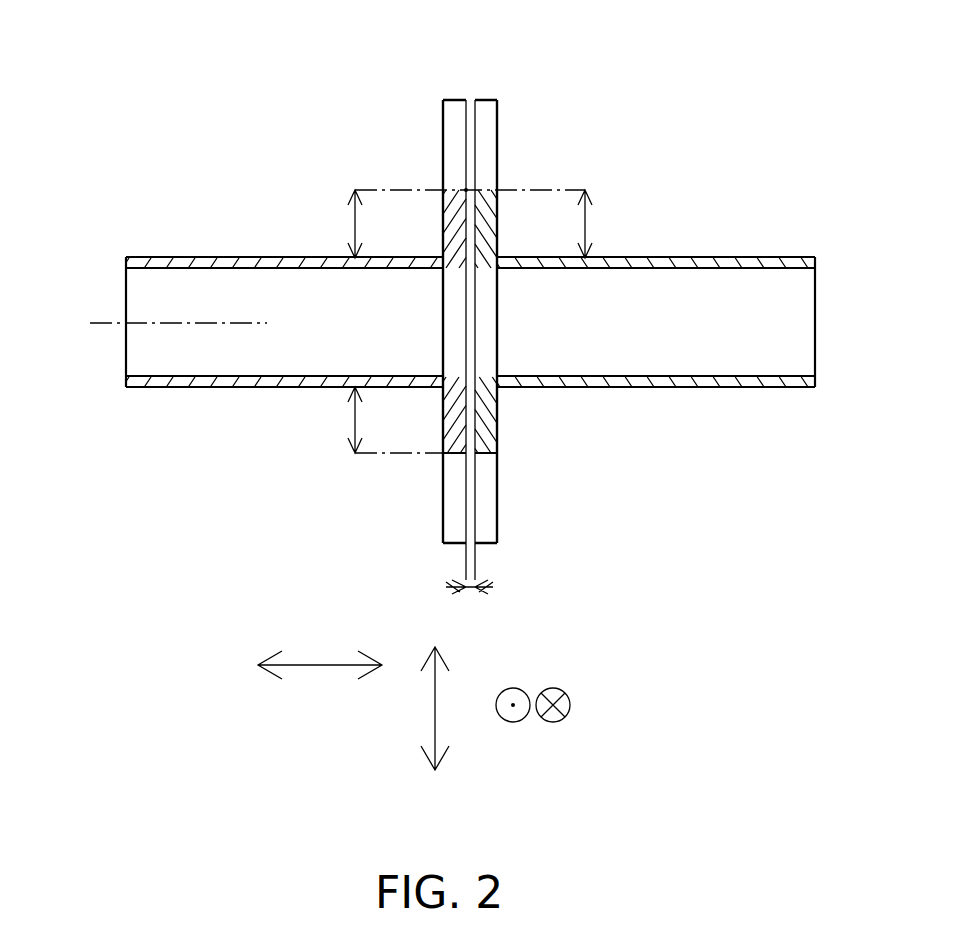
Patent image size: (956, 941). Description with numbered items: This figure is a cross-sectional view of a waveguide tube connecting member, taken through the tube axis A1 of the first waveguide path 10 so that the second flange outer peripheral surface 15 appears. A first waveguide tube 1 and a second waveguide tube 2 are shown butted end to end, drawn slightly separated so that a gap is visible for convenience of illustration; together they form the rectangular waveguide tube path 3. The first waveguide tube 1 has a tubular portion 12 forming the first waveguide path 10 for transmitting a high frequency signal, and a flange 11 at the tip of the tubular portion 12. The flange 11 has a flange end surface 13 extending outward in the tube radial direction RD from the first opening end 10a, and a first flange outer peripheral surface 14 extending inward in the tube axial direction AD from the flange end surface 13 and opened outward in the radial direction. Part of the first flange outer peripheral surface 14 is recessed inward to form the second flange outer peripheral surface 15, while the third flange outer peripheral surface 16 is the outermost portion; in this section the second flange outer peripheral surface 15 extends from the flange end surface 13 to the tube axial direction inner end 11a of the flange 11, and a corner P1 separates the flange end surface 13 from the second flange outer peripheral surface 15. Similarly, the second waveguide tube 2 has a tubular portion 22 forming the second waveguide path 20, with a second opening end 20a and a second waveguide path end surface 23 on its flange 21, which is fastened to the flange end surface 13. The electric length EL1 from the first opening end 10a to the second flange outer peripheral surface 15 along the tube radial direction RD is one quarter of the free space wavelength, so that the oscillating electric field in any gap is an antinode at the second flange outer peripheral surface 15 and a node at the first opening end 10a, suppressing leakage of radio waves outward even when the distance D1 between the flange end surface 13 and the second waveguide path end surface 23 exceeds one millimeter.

The first waveguide tube 1 is at (306, 34).
The second waveguide tube 2 is at (616, 42).
The rectangular waveguide tube path 3 is at (470, 318).
The first waveguide path 10 is at (206, 360).
The first opening end 10a is at (464, 276).
The flange 11 is at (461, 88).
The tube axial direction inner end 11a is at (452, 197).
The tubular portion 12 is at (173, 257).
The flange end surface 13 is at (454, 240).
The first flange outer peripheral surface 14 is at (429, 309).
The second flange outer peripheral surface 15 is at (455, 180).
The third flange outer peripheral surface 16 is at (447, 100).
The second waveguide path 20 is at (710, 364).
The second opening end 20a is at (476, 276).
The flange 21 is at (497, 88).
The tubular portion 22 is at (767, 257).
The second waveguide path end surface 23 is at (486, 208).
The corner P1 is at (467, 190).
The tube axis A1 is at (159, 323).
The electric length EL1 is at (355, 223).
The distance D1 is at (477, 603).
The tube axial direction AD is at (320, 675).
The tube radial direction RD is at (449, 708).